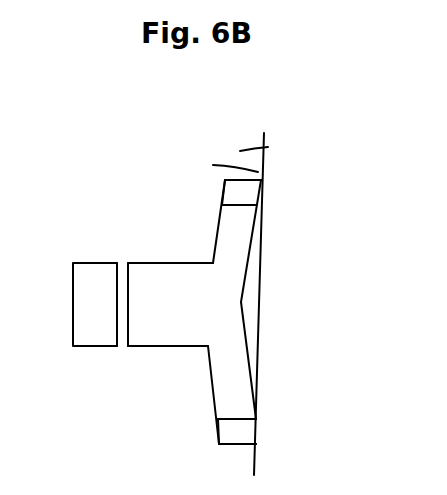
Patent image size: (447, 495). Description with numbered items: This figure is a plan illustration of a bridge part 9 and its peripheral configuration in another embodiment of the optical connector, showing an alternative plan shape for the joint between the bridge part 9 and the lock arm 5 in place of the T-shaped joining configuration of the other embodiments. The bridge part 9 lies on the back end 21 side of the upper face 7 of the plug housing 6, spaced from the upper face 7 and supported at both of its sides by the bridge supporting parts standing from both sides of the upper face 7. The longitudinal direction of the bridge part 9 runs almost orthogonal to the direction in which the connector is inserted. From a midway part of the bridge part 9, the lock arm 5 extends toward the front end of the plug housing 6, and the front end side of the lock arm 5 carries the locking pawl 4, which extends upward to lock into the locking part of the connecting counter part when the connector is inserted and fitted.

The locking pawl 4 is at (95, 270).
The lock arm 5 is at (153, 270).
The plug housing 6 is at (268, 147).
The upper face 7 is at (258, 172).
The bridge part 9 is at (233, 263).
The back end 21 is at (261, 312).